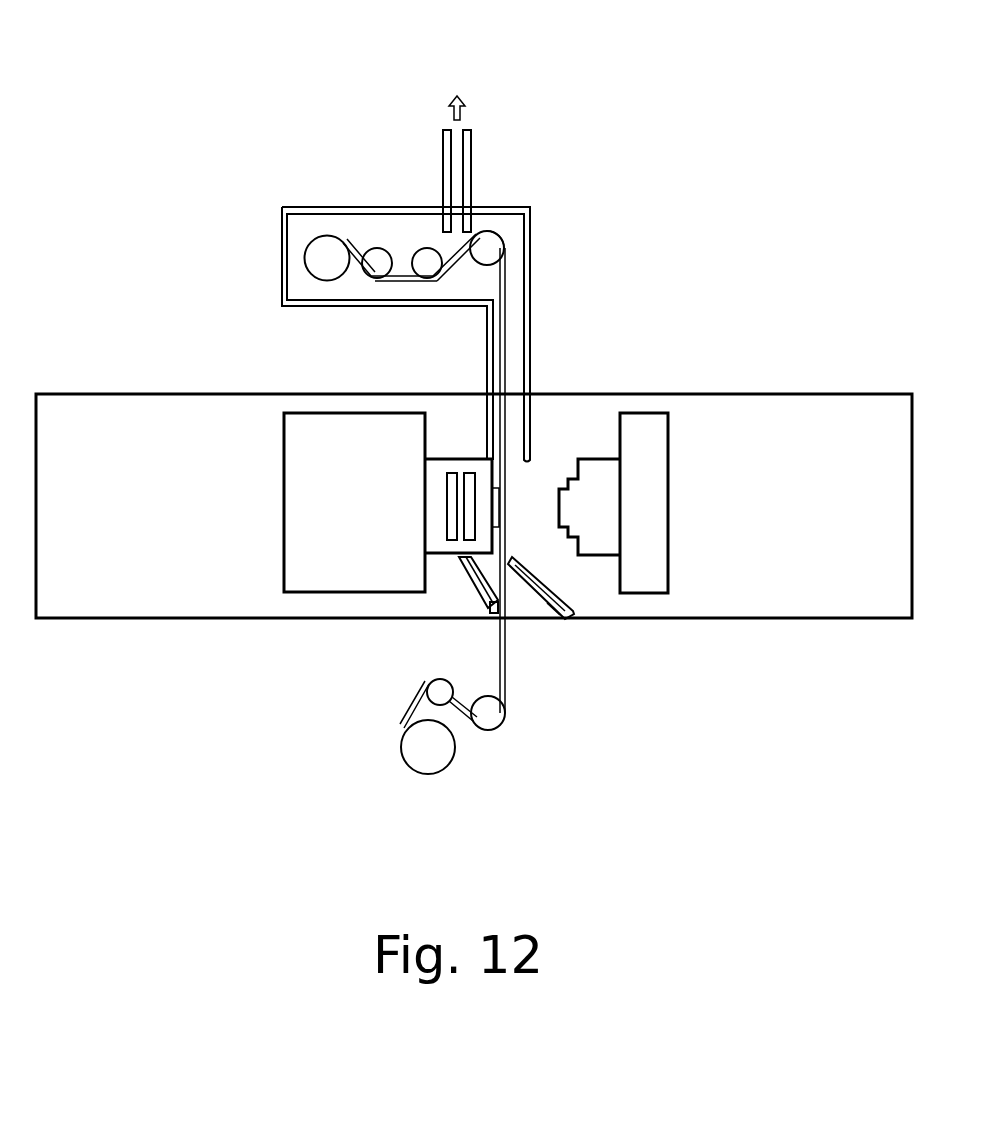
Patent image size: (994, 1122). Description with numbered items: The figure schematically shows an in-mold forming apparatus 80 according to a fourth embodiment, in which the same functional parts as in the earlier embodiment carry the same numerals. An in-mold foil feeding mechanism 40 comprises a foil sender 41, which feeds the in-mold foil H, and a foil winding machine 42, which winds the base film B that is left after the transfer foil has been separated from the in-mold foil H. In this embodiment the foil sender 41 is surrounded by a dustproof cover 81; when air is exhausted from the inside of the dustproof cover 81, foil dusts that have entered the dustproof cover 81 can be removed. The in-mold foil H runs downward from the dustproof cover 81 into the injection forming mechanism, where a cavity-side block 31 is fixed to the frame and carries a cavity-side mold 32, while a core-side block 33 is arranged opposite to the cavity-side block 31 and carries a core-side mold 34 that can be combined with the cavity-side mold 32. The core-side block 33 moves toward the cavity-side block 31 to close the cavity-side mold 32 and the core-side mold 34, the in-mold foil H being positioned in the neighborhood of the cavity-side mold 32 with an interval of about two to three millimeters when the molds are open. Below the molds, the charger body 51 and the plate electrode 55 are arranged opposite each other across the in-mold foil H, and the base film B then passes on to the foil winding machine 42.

The in-mold forming apparatus 80 is at (621, 260).
The dustproof cover 81 is at (518, 210).
The in-mold foil feeding mechanism 40 is at (367, 239).
The foil sender 41 is at (327, 236).
The foil winding machine 42 is at (428, 775).
The cavity-side block 31 is at (285, 452).
The cavity-side mold 32 is at (435, 476).
The core-side block 33 is at (669, 450).
The core-side mold 34 is at (605, 512).
The charger body 51 is at (468, 585).
The plate electrode 55 is at (566, 620).
The in-mold foil H is at (504, 340).
The base film B is at (482, 756).